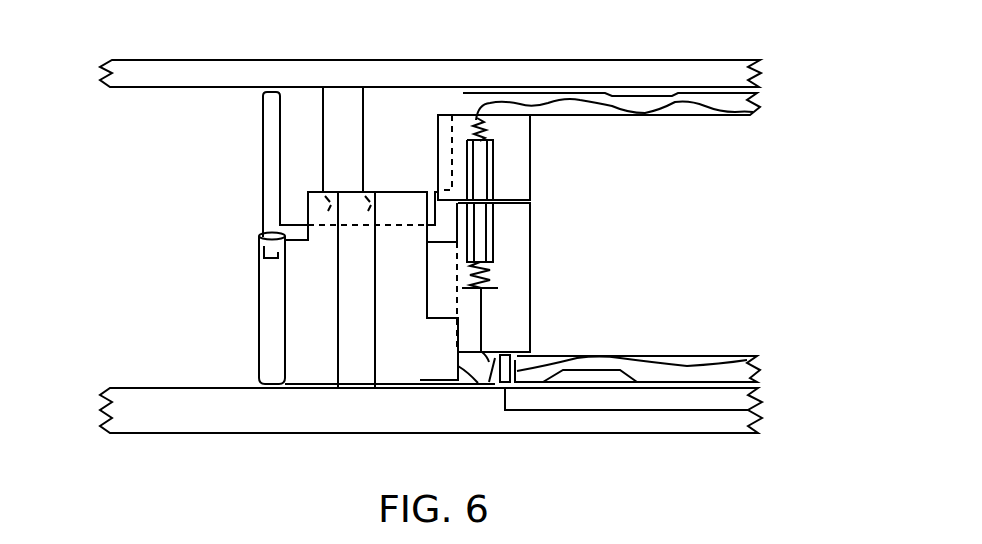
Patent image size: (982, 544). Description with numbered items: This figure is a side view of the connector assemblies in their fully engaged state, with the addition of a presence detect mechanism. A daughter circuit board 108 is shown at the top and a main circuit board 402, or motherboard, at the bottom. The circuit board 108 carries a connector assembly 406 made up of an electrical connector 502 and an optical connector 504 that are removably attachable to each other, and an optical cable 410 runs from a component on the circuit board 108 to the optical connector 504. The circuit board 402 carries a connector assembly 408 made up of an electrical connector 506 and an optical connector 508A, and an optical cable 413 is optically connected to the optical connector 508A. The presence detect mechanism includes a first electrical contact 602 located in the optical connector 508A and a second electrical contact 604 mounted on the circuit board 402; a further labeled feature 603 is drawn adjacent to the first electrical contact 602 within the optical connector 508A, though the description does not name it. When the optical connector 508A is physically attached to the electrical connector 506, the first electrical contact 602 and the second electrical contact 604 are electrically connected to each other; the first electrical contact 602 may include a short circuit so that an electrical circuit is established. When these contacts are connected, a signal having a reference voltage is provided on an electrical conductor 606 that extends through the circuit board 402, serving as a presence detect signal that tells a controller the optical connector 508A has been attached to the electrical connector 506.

The circuit board 108 is at (528, 66).
The circuit board 402 is at (142, 387).
The connector assembly 406 is at (200, 92).
The connector assembly 408 is at (232, 192).
The optical cable 410 is at (706, 117).
The optical cable 413 is at (732, 355).
The electrical connector 502 is at (456, 112).
The optical connector 504 is at (530, 150).
The electrical connector 506 is at (470, 392).
The optical connector 508A is at (530, 277).
The first electrical contact 602 is at (512, 342).
The hook 603 is at (503, 342).
The second electrical contact 604 is at (490, 362).
The electrical conductor 606 is at (628, 410).